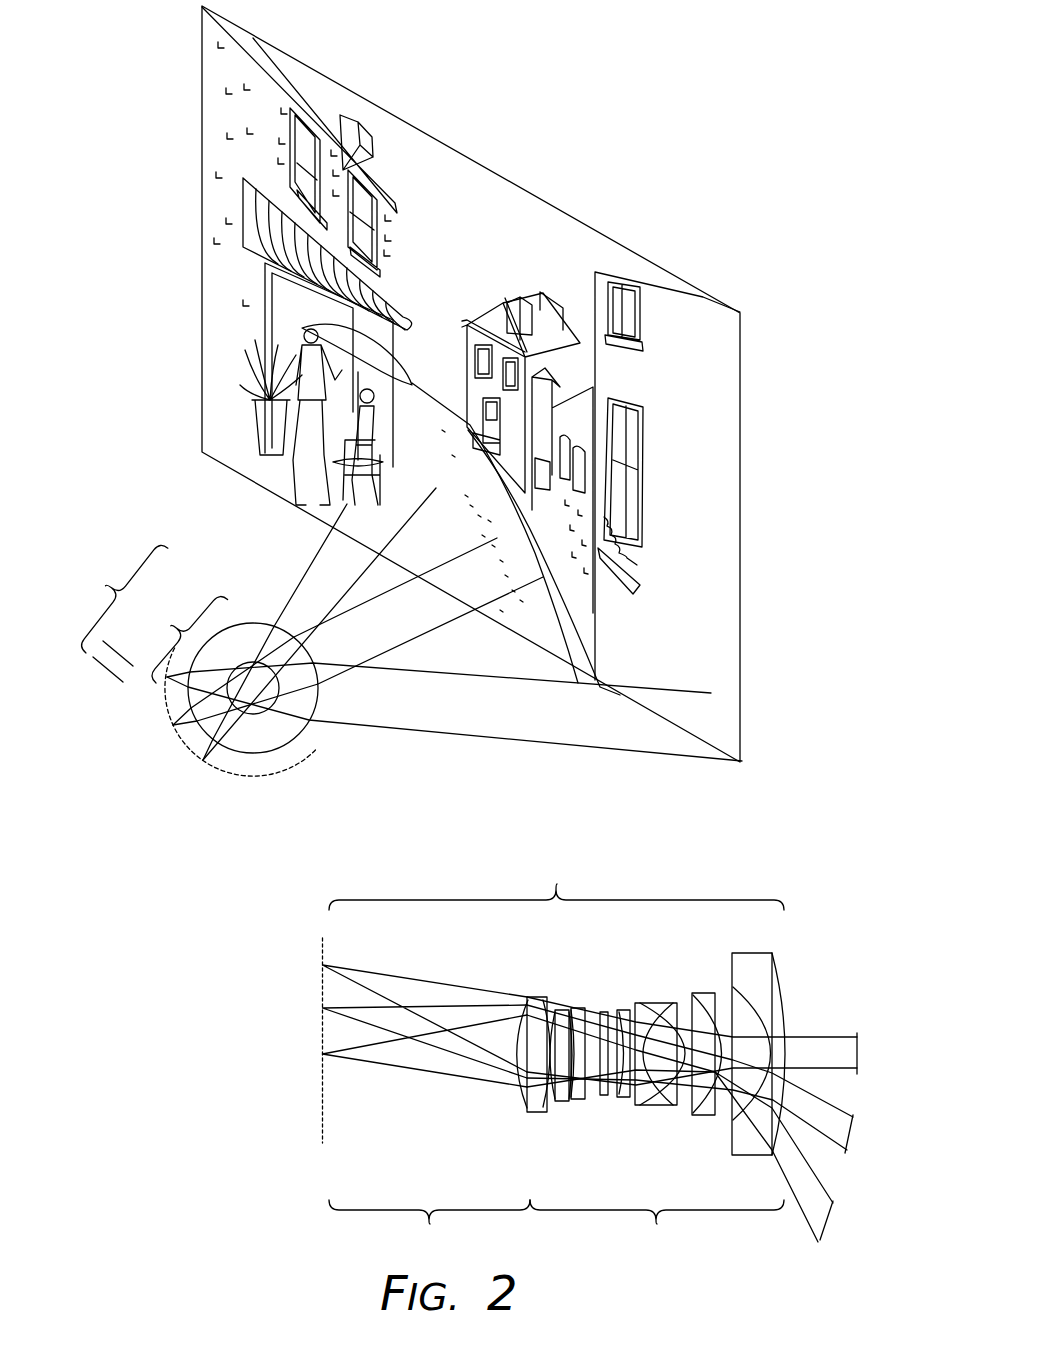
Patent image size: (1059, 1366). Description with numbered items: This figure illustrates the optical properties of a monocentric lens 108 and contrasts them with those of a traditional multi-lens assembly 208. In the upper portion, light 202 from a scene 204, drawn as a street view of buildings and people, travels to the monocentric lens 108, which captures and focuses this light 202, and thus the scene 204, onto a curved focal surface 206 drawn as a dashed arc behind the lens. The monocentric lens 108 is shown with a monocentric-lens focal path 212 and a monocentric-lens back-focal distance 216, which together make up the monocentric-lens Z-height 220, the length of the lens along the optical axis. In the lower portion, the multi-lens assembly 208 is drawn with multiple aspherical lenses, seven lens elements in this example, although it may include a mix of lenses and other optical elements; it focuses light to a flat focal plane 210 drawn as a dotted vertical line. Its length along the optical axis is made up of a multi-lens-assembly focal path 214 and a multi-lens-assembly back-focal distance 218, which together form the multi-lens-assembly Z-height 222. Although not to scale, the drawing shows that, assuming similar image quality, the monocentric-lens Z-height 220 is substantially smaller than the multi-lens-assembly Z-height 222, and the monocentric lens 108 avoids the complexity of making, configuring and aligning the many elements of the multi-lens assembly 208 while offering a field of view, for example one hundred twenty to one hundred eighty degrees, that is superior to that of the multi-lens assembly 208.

The monocentric lens 108 is at (313, 727).
The light 202 is at (306, 569).
The scene 204 is at (509, 183).
The curved focal surface 206 is at (285, 772).
The multi-lens assembly 208 is at (638, 1126).
The flat focal plane 210 is at (318, 1128).
The monocentric-lens focal path 212 is at (177, 633).
The multi-lens-assembly focal path 214 is at (657, 1227).
The monocentric-lens back-focal distance 216 is at (100, 664).
The multi-lens-assembly back-focal distance 218 is at (429, 1227).
The monocentric-lens Z-height 220 is at (115, 592).
The multi-lens-assembly Z-height 222 is at (556, 886).